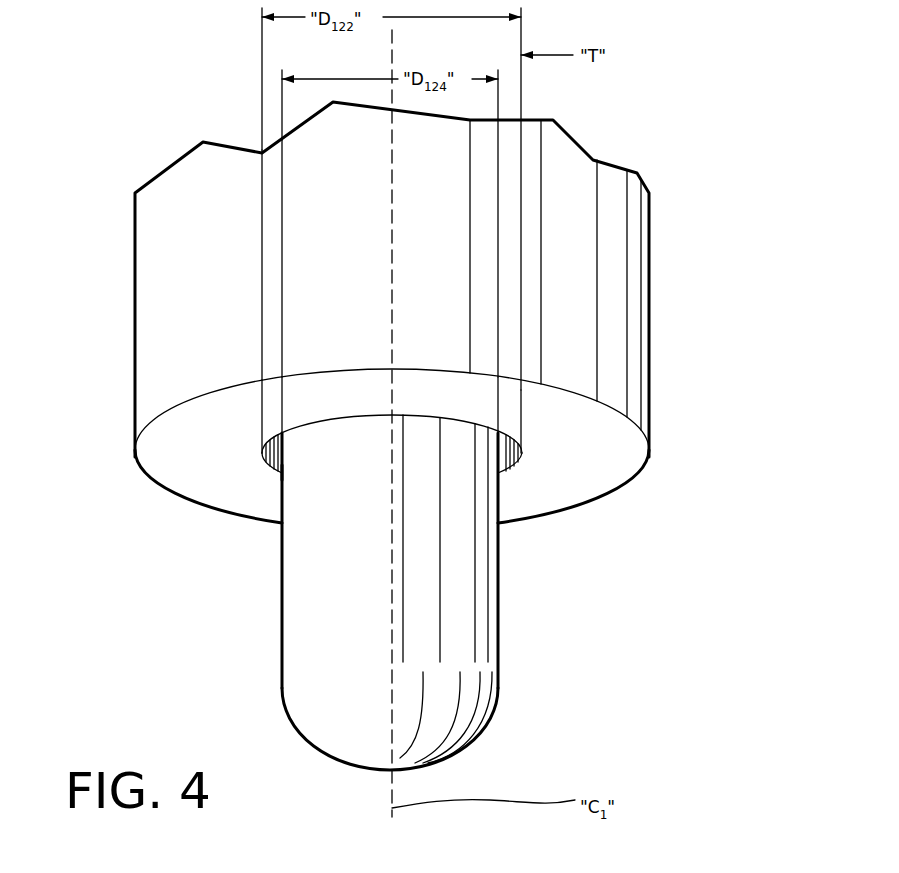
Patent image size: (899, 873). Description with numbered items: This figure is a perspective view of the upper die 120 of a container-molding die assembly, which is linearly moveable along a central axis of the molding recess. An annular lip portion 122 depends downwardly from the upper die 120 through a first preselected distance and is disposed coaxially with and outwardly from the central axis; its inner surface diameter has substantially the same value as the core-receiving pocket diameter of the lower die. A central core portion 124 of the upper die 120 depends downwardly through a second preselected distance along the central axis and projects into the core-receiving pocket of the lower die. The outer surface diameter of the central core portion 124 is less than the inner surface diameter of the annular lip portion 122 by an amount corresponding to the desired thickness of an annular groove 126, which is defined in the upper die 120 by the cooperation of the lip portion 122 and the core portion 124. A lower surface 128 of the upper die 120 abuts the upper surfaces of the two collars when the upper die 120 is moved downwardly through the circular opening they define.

The upper die 120 is at (660, 216).
The annular lip portion 122 is at (653, 447).
The central core portion 124 is at (491, 658).
The annular groove 126 is at (283, 467).
The lower surface 128 is at (608, 472).